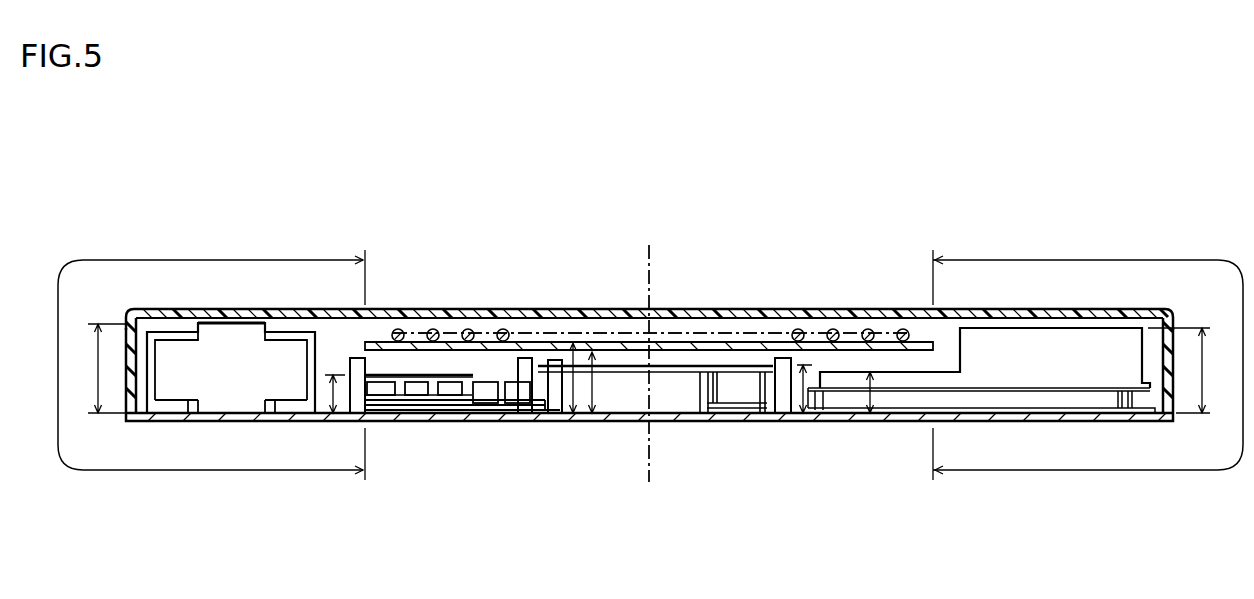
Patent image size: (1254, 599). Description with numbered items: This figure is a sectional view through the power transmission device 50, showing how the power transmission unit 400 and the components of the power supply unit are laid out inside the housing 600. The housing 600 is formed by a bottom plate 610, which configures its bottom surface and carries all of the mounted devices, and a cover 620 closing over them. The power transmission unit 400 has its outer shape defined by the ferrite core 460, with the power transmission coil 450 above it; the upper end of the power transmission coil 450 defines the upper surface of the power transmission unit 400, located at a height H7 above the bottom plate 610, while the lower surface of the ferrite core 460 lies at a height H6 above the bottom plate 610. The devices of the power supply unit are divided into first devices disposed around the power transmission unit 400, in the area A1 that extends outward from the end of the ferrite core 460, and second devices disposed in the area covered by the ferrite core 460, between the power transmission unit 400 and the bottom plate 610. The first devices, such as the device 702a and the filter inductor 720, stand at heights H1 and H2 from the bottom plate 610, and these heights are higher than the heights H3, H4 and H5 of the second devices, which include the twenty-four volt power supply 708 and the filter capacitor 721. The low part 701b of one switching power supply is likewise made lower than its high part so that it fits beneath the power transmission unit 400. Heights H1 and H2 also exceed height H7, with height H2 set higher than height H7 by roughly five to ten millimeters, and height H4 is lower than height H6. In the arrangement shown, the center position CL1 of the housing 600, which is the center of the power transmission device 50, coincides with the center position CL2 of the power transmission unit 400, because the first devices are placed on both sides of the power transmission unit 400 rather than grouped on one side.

The power transmission device 50 is at (996, 491).
The power transmission unit 400 is at (588, 262).
The power transmission coil 450 is at (503, 330).
The ferrite core 460 is at (578, 347).
The housing 600 is at (890, 310).
The cover 620 is at (228, 310).
The bottom plate 610 is at (408, 417).
The filter capacitor 721 is at (450, 390).
The filter inductor 720 is at (232, 386).
The 24V power supply 708 is at (630, 388).
The first device (part of switching power supply 702) 702a is at (1047, 367).
The low part of switching power supply 701b is at (913, 376).
The area around power transmission unit / winding axis A1 is at (650, 365).
The center position of housing CL1 is at (651, 468).
The center position of power transmission unit CL2 is at (651, 363).
The height of first device 702a H1 is at (1190, 370).
The height of first device 720 H2 is at (97, 368).
The height of second device H3 is at (822, 392).
The height of second device 708 H4 is at (327, 387).
The height of second device 721 H5 is at (880, 392).
The height to lower surface of ferrite core H6 is at (593, 387).
The height of upper surface of power transmission unit H7 is at (573, 383).